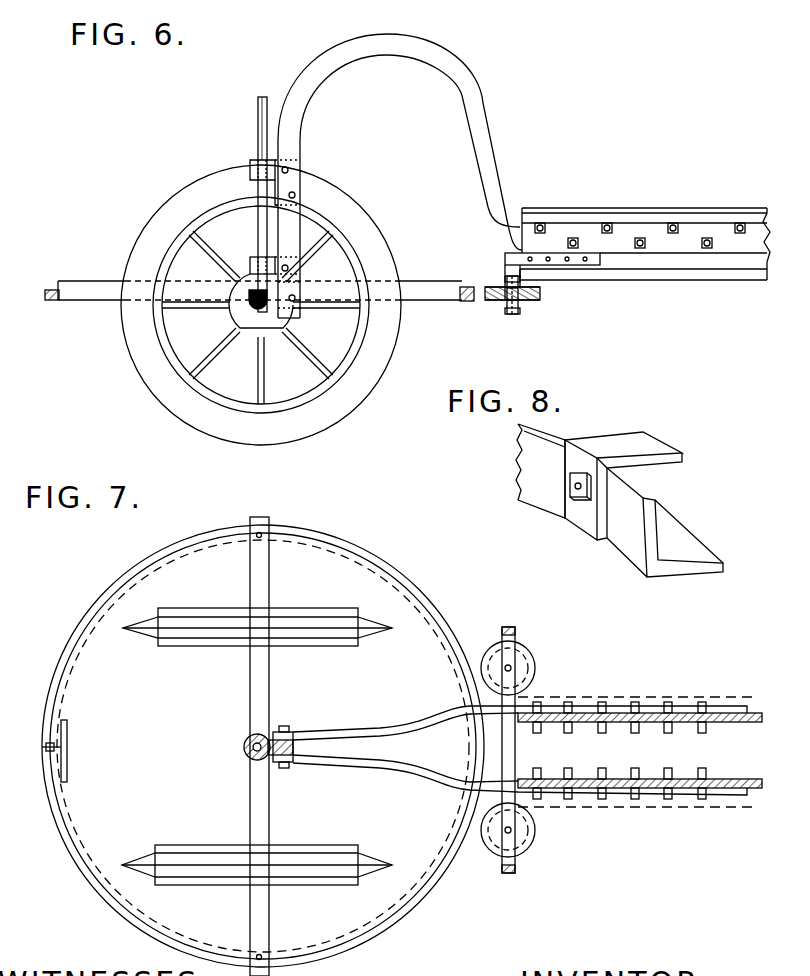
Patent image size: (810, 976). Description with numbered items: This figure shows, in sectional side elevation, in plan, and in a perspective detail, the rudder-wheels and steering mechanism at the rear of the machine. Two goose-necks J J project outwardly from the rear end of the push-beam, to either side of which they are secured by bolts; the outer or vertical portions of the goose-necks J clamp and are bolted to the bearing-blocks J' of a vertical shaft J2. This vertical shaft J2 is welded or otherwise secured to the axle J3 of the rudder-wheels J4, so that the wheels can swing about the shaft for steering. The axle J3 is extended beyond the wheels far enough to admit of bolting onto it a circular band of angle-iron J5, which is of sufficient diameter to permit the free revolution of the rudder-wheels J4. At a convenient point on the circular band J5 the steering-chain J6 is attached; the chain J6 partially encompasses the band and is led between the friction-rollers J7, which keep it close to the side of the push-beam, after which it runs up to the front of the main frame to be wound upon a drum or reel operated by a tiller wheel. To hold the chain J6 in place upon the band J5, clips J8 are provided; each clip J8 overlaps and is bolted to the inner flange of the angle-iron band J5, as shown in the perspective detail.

In FIG. 6, the goose-neck J is at (524, 176).
In FIG. 7, the goose-neck J is at (527, 748).
In FIG. 6, the bearing-block J' is at (249, 206).
In FIG. 7, the bearing-block J' is at (333, 747).
In FIG. 6, the vertical shaft J2 is at (262, 96).
In FIG. 7, the vertical shaft J2 is at (245, 745).
In FIG. 6, the axle J3 is at (256, 320).
In FIG. 7, the axle J3 is at (256, 682).
In FIG. 6, the rudder-wheel J4 is at (330, 388).
In FIG. 7, the rudder-wheel J4 is at (200, 622).
In FIG. 6, the circular band of angle-iron J5 is at (78, 282).
In FIG. 8, the circular band of angle-iron J5 is at (553, 477).
In FIG. 7, the circular band of angle-iron J5 is at (82, 652).
In FIG. 6, the chain J6 is at (552, 276).
In FIG. 7, the chain J6 is at (458, 645).
In FIG. 6, the friction-roller J7 is at (538, 297).
In FIG. 7, the friction-roller J7 is at (525, 665).
In FIG. 8, the clip J8 is at (642, 443).